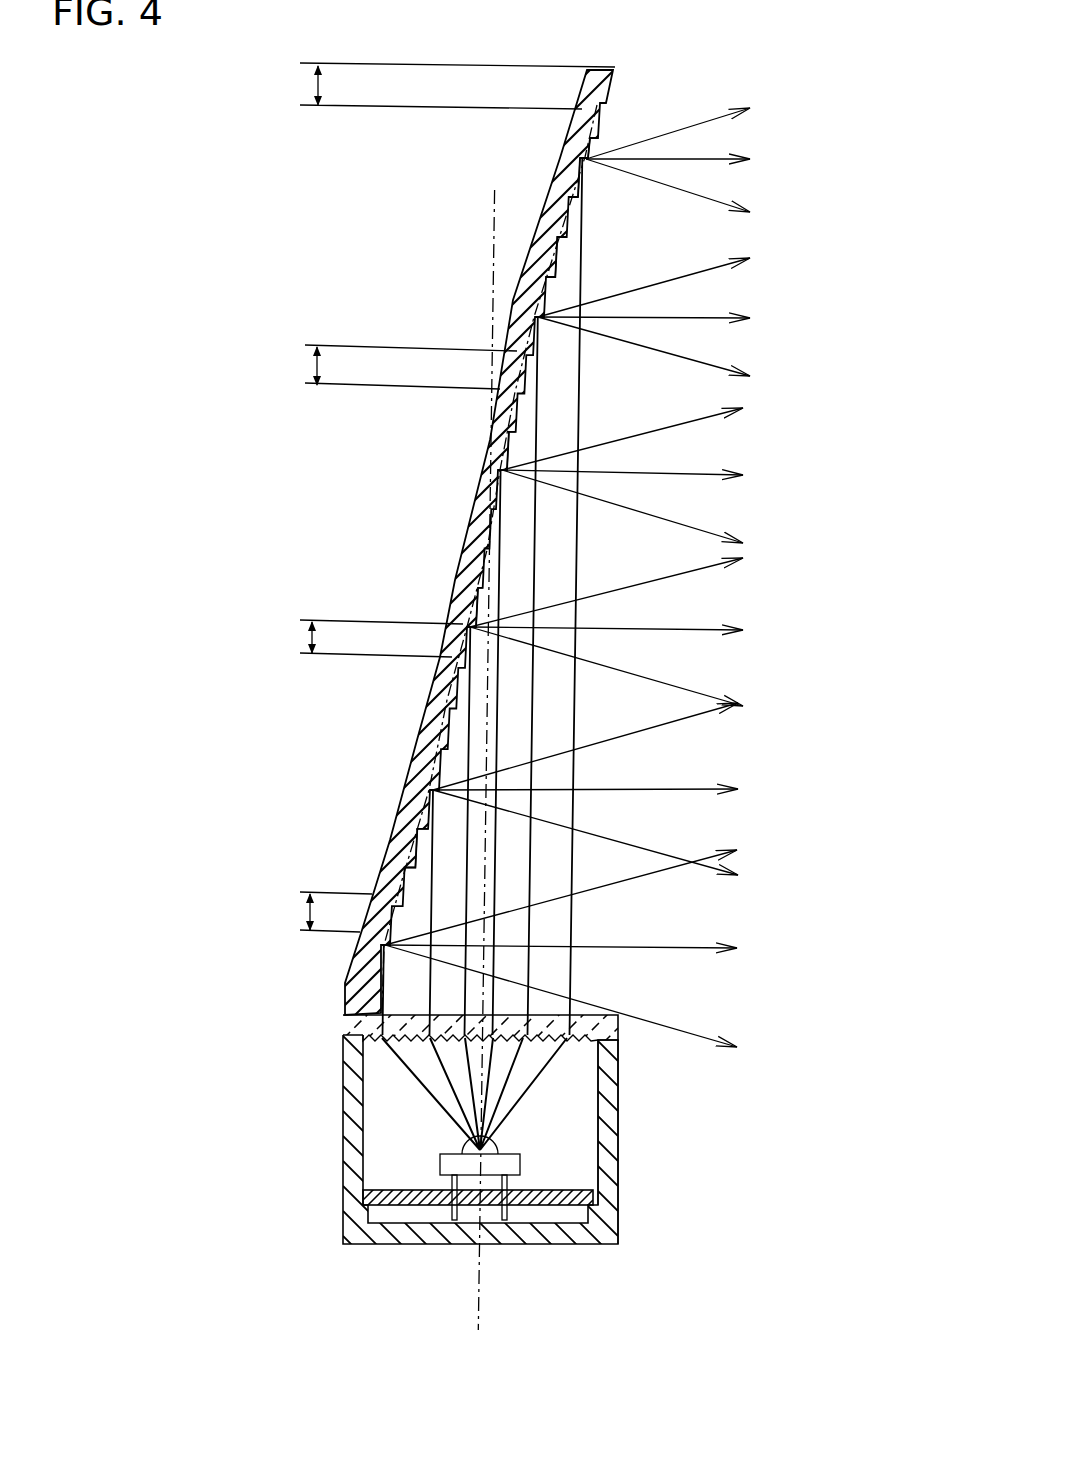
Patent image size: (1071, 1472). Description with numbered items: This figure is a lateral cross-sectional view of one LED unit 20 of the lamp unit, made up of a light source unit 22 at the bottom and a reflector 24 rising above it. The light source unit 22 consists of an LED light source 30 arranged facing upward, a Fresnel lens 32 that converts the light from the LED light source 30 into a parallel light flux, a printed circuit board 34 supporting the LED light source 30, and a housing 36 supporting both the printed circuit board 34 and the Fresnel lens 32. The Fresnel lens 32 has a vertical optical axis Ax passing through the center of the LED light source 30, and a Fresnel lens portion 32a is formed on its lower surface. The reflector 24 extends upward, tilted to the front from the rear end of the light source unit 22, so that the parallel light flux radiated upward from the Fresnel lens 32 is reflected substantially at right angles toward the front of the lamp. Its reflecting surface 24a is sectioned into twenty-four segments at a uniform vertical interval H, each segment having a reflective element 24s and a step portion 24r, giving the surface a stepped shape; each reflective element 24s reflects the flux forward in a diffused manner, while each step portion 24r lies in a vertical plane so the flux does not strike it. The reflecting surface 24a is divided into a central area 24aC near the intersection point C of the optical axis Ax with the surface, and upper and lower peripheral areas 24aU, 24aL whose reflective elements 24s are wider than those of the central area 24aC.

The LED unit 20 is at (303, 287).
The light source unit 22 is at (337, 1053).
The reflector 24 is at (465, 497).
The reflective element 24s is at (589, 159).
The step portion 24r is at (590, 182).
The upper peripheral area 24aU is at (558, 259).
The reflecting surface 24a is at (506, 467).
The intersection point C is at (492, 556).
The central area 24aC is at (484, 588).
The lower peripheral area 24aL is at (428, 886).
The LED light source 30 is at (462, 1143).
The Fresnel lens 32 is at (600, 1018).
The Fresnel lens portion 32a is at (388, 1038).
The printed circuit board 34 is at (553, 1190).
The housing 36 is at (607, 1122).
The optical axis Ax is at (493, 283).
The uniform interval H is at (447, 497).